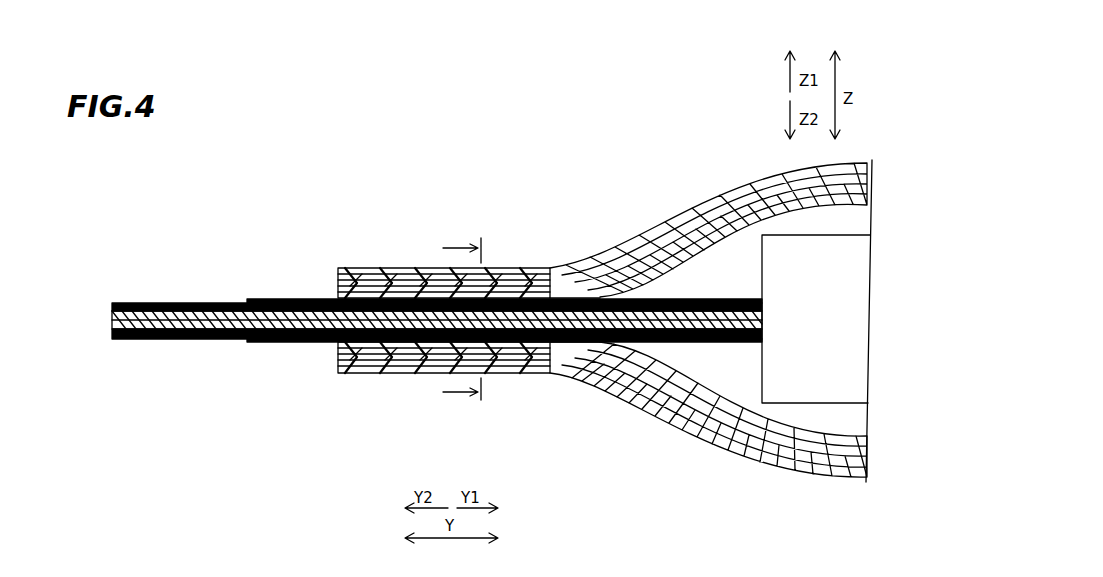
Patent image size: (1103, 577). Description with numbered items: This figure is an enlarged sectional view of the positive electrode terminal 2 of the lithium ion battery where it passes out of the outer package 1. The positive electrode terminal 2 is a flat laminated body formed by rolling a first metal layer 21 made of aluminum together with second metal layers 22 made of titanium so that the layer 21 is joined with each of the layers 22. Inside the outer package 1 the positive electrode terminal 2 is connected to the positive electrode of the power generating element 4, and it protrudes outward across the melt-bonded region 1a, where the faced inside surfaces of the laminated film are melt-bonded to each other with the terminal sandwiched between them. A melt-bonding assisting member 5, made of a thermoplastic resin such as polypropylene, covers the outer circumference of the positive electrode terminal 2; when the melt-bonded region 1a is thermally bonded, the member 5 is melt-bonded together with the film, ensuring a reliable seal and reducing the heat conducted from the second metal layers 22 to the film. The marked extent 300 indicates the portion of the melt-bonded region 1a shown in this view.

The outer package 1 is at (602, 310).
The melt-bonded region 1a is at (375, 284).
The positive electrode terminal 2 is at (393, 320).
The first metal layer 21 is at (407, 320).
The second metal layer 22 is at (112, 304).
The power generating element 4 is at (855, 321).
The melt-bonding assisting member 5 is at (258, 343).
The dimension / region 300 is at (453, 323).